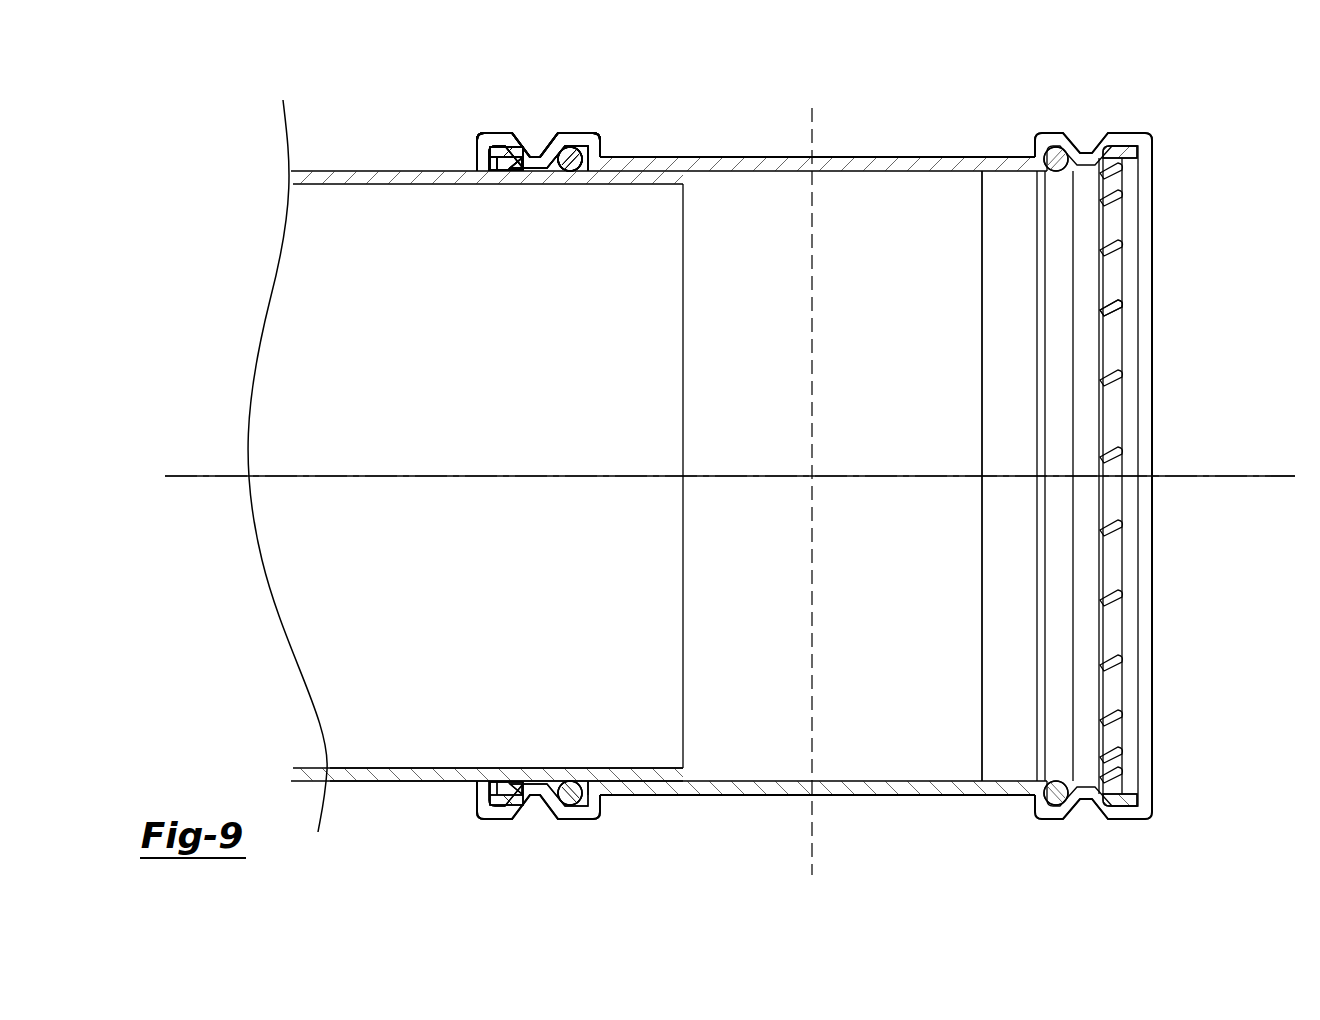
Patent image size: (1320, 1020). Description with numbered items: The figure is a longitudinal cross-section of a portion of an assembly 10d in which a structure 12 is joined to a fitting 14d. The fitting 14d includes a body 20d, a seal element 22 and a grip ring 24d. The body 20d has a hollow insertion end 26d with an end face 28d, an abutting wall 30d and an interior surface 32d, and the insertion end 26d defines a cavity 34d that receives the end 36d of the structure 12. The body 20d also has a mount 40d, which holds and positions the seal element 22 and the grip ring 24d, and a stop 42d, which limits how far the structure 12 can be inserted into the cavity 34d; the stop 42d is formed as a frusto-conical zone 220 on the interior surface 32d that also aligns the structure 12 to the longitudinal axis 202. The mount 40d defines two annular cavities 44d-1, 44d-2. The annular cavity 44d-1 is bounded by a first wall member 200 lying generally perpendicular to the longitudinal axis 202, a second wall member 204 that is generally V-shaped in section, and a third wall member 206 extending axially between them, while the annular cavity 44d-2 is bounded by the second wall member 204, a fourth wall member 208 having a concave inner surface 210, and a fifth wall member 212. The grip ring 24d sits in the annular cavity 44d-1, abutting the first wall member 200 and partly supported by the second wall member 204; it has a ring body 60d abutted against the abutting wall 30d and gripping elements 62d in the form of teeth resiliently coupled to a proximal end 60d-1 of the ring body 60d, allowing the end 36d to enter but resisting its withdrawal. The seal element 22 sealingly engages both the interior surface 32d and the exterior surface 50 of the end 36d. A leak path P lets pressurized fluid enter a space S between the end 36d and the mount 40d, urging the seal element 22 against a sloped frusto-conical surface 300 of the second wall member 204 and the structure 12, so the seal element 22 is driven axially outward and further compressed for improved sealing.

The assembly 10d is at (224, 155).
The structure 12 is at (357, 783).
The fitting 14d is at (500, 72).
The body 20d is at (607, 157).
The seal element 22 is at (570, 148).
The grip ring 24d is at (498, 144).
The insertion end 26d is at (472, 781).
The end face 28d is at (478, 800).
The abutting wall 30d is at (490, 153).
The interior surface 32d is at (759, 172).
The cavity 34d is at (770, 744).
The end 36d is at (522, 778).
The mount 40d is at (605, 884).
The stop 42d is at (602, 175).
The annular cavity 44d-1 is at (1122, 130).
The annular cavity 44d-2 is at (1052, 130).
The exterior surface 50 is at (608, 791).
The ring body 60d is at (494, 155).
The proximal end 60d-1 is at (1130, 798).
The gripping elements 62d is at (510, 168).
The leak path P is at (606, 171).
The space S is at (597, 176).
The first wall member 200 is at (1154, 800).
The longitudinal axis 202 is at (878, 470).
The second wall member 204 is at (1092, 822).
The third wall member 206 is at (1123, 821).
The fourth wall member 208 is at (1036, 812).
The concave inner surface 210 is at (1058, 780).
The fifth wall member 212 is at (1066, 820).
The frusto-conical zone 220 is at (991, 168).
The sloped frusto-conical surface 300 is at (1070, 170).